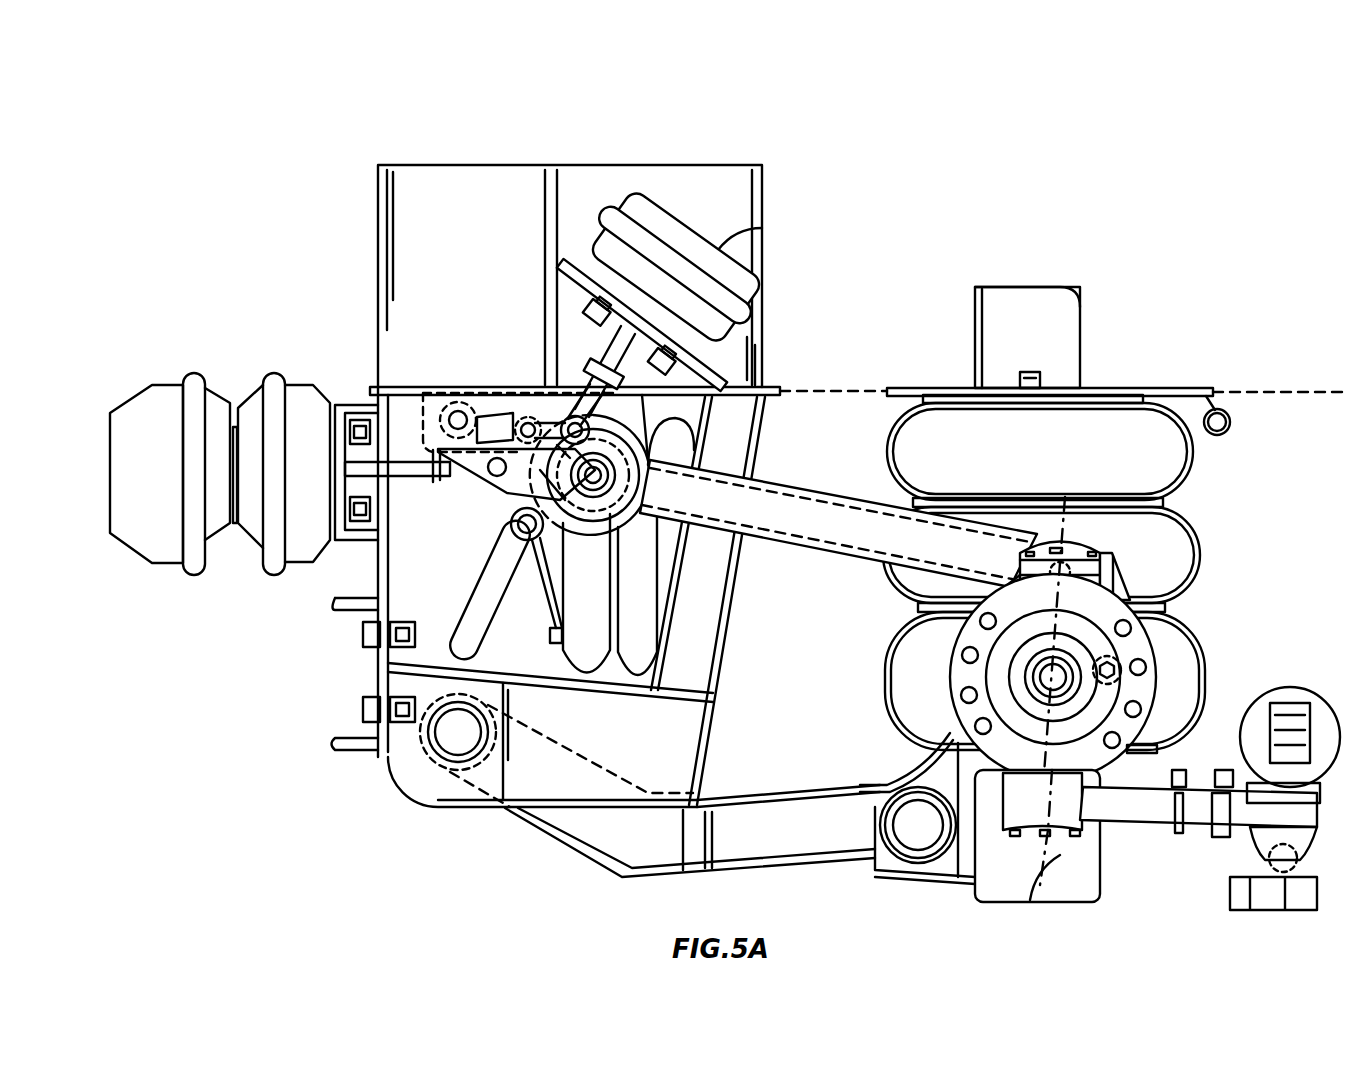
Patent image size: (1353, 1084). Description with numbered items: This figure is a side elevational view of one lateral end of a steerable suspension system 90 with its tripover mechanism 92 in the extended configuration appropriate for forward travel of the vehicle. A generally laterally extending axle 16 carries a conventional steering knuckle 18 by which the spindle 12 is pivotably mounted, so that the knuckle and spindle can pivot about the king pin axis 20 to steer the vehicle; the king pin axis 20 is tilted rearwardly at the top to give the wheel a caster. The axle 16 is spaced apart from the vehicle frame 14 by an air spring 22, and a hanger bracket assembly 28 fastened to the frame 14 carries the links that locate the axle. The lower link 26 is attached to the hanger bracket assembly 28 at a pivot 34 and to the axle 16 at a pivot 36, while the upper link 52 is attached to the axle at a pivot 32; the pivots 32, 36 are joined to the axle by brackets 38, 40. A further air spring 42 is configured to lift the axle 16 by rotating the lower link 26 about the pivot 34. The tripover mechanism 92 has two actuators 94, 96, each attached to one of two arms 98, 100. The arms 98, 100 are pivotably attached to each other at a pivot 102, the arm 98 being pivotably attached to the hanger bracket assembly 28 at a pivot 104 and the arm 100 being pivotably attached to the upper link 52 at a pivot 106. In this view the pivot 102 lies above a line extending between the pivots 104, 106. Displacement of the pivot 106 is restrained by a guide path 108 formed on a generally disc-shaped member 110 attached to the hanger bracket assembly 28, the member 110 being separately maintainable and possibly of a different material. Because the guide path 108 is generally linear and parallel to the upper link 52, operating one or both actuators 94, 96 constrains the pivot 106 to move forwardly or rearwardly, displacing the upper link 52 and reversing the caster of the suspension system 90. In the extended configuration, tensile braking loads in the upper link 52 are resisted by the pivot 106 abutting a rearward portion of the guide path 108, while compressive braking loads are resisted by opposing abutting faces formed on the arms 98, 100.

The steerable suspension system 90 is at (924, 209).
The tripover mechanism 92 is at (480, 310).
The actuator 96 is at (722, 250).
The pivot 102 is at (530, 418).
The pivot 104 is at (458, 402).
The arm 98 is at (497, 415).
The arm 100 is at (510, 498).
The disc-shaped member 110 is at (650, 492).
The pivot 106 is at (612, 540).
The guide path 108 is at (528, 548).
The actuator 94 is at (282, 372).
The hanger bracket assembly 28 is at (378, 588).
The air spring 42 is at (695, 440).
The lower link 26 is at (743, 787).
The pivot 34 is at (433, 757).
The upper link 52 is at (793, 545).
The air spring 22 is at (1193, 480).
The vehicle frame 14 is at (1283, 398).
The spindle 12 is at (1068, 687).
The pivot 32 is at (1112, 578).
The bracket 38 is at (1128, 592).
The bracket 40 is at (876, 855).
The pivot 36 is at (945, 880).
The king pin axis 20 is at (1030, 900).
The steering knuckle 18 is at (1090, 815).
The axle 16 is at (1082, 883).